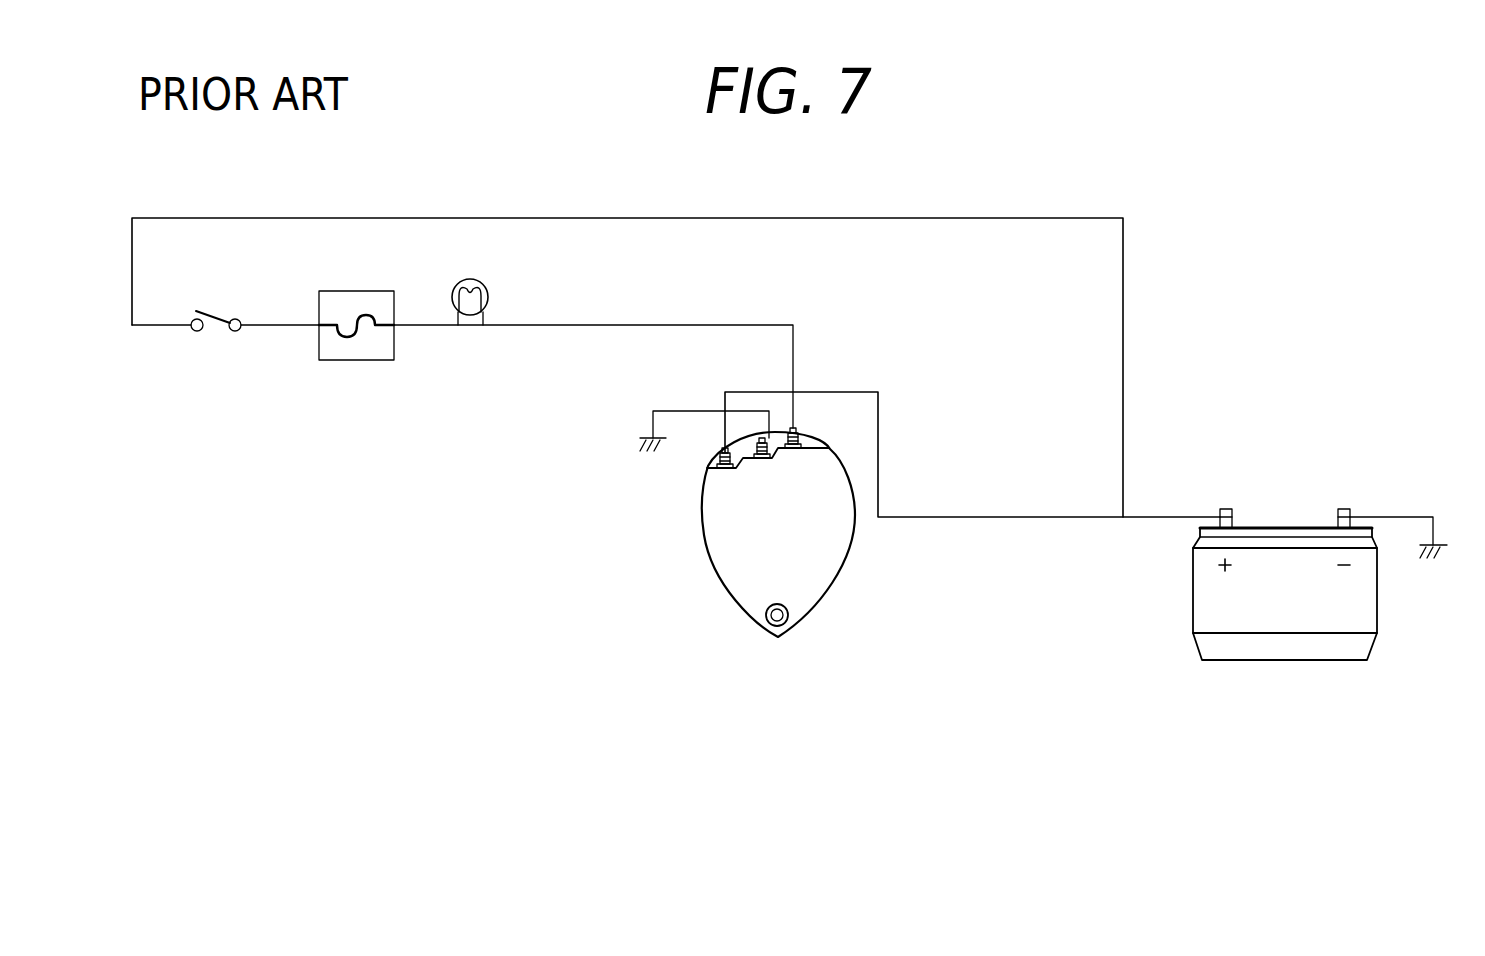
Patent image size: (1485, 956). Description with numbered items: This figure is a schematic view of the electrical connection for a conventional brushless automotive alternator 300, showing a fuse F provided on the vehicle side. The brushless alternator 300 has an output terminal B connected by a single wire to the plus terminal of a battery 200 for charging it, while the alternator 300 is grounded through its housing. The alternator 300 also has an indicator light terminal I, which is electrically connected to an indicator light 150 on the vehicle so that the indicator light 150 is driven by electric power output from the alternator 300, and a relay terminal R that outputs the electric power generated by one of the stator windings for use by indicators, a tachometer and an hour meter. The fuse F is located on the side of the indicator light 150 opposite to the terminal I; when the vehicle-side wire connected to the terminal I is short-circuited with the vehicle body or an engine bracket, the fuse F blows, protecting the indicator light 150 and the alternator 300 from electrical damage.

The fuse F is at (377, 291).
The indicator light 150 is at (489, 296).
The brushless alternator 300 is at (843, 568).
The battery 200 is at (1296, 528).